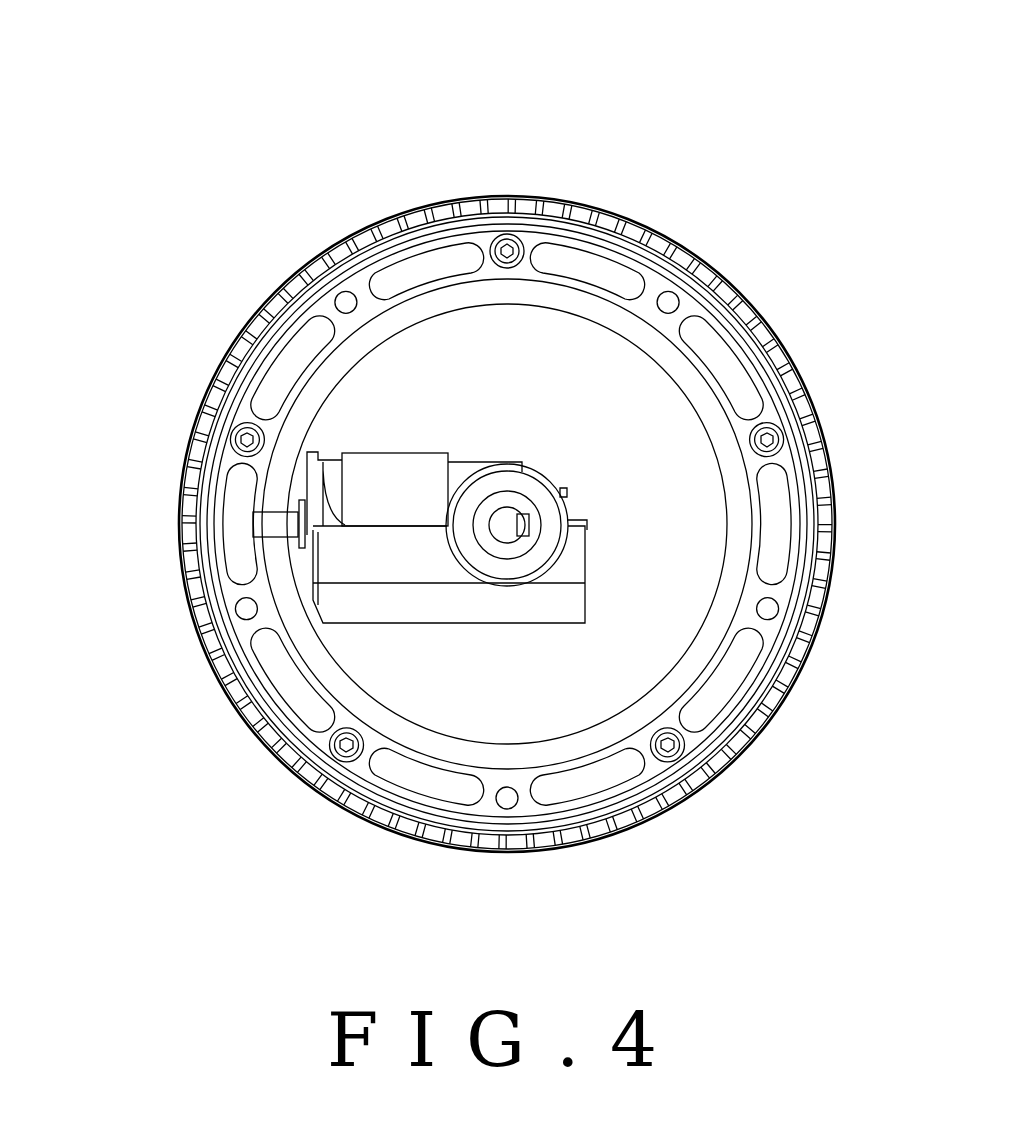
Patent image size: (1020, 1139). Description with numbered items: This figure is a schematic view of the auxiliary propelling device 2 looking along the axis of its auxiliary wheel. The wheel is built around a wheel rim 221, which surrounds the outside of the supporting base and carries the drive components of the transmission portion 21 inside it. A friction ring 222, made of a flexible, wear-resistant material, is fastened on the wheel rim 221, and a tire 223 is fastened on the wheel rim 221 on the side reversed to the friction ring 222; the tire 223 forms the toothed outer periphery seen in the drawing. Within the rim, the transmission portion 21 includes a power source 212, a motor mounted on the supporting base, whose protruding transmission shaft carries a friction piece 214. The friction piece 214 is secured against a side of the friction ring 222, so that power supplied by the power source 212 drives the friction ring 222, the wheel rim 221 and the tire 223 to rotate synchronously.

The auxiliary propelling device 2 is at (237, 170).
The transmission portion 21 is at (443, 632).
The power source 212 is at (407, 466).
The friction piece 214 is at (270, 527).
The wheel rim 221 is at (525, 802).
The friction ring 222 is at (300, 470).
The tire 223 is at (743, 325).